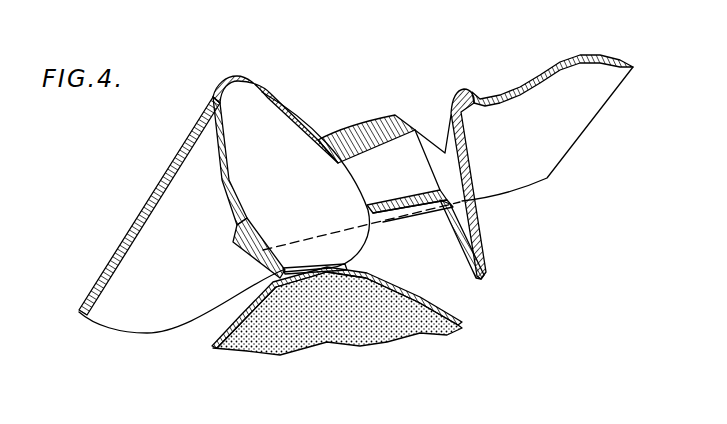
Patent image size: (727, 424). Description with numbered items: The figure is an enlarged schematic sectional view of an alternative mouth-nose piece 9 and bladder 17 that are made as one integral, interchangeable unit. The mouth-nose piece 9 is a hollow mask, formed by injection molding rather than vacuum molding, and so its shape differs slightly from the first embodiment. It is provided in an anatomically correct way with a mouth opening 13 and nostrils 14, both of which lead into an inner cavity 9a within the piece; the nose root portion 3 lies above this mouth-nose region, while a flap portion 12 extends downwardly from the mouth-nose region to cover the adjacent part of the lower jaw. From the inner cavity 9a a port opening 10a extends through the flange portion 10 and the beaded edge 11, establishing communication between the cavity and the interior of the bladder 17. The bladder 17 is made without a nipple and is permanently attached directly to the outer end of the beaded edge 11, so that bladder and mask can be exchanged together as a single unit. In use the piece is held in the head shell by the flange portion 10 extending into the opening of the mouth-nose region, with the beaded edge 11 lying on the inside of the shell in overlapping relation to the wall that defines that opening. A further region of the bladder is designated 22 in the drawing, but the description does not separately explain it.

The nose root portion 3 is at (116, 266).
The mouth-nose piece 9 is at (172, 168).
The inner cavity 9a is at (243, 181).
The flange portion 10 is at (232, 228).
The port opening 10a is at (296, 268).
The beaded edge 11 is at (345, 265).
The flap portion 12 is at (532, 80).
The mouth opening 13 is at (450, 118).
The nostrils 14 is at (273, 102).
The bladder 17 is at (245, 348).
The pad covering 22 is at (463, 321).